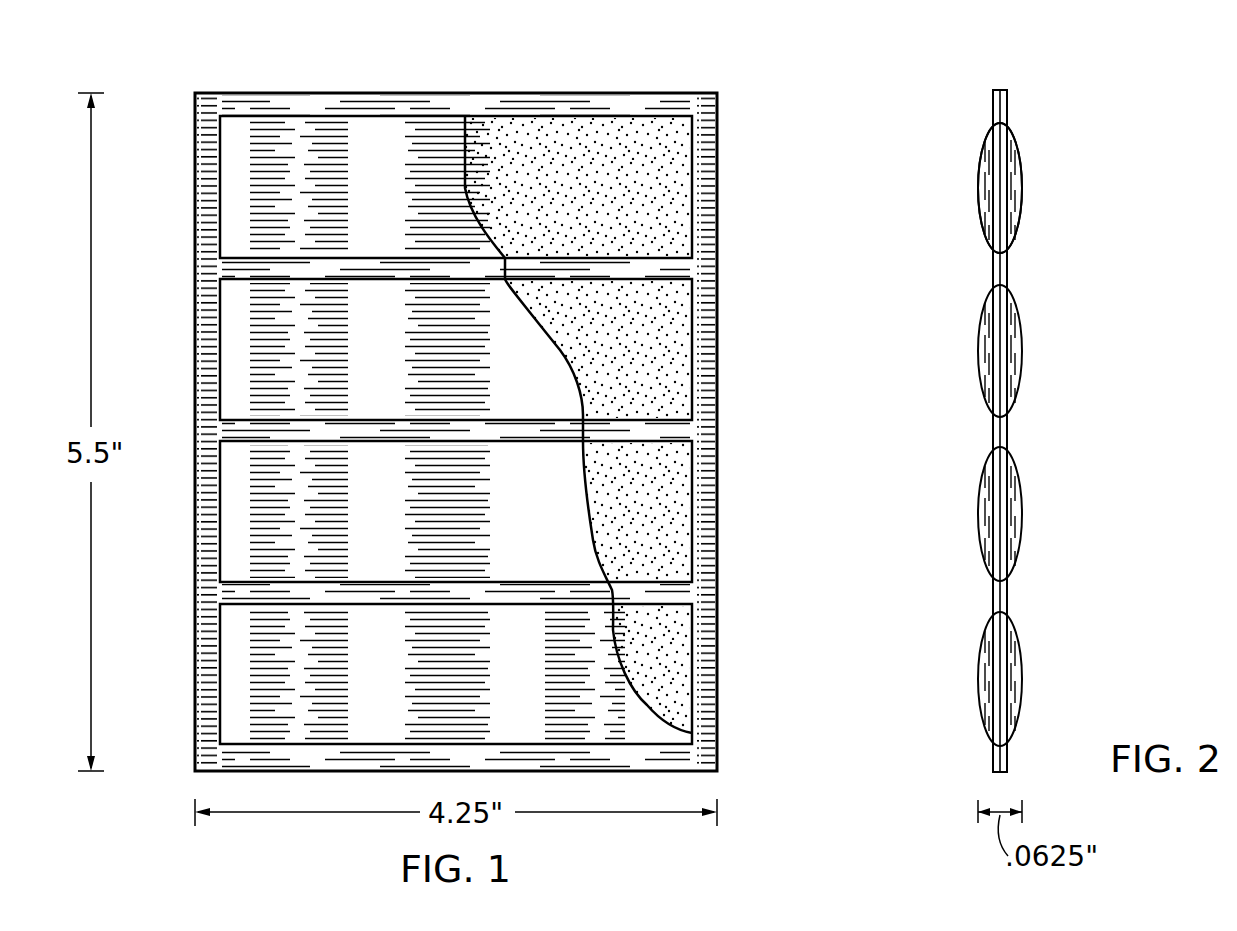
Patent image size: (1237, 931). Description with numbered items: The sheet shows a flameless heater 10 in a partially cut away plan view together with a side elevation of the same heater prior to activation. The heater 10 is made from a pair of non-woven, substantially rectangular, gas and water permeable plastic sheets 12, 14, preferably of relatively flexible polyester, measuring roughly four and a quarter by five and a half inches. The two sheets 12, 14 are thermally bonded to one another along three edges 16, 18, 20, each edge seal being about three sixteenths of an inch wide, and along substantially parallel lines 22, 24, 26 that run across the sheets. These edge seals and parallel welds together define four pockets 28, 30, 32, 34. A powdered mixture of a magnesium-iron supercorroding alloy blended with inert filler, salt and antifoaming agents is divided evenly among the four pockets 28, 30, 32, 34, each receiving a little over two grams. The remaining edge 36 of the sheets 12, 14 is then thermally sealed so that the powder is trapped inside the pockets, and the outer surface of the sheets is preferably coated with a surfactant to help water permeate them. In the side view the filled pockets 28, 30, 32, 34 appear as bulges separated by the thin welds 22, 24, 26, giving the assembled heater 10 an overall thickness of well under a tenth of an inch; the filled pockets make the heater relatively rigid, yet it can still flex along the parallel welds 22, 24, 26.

In FIG. 1, the flameless heater 10 is at (645, 78).
In FIG. 1, the plastic sheet 12 is at (365, 157).
In FIG. 2, the plastic sheet 12 is at (978, 186).
In FIG. 2, the plastic sheet 14 is at (1021, 197).
In FIG. 1, the edge 16 is at (500, 106).
In FIG. 2, the edge 16 is at (1003, 100).
In FIG. 1, the edge 18 is at (203, 302).
In FIG. 1, the edge 20 is at (345, 753).
In FIG. 2, the edge 20 is at (1005, 763).
In FIG. 1, the parallel line 22 is at (652, 268).
In FIG. 2, the parallel line 22 is at (1004, 272).
In FIG. 1, the parallel line 24 is at (690, 433).
In FIG. 2, the parallel line 24 is at (1008, 433).
In FIG. 1, the parallel line 26 is at (672, 592).
In FIG. 2, the parallel line 26 is at (1008, 597).
In FIG. 1, the pocket 28 is at (685, 200).
In FIG. 2, the pocket 28 is at (1042, 167).
In FIG. 1, the pocket 30 is at (660, 352).
In FIG. 2, the pocket 30 is at (1037, 359).
In FIG. 1, the pocket 32 is at (668, 518).
In FIG. 2, the pocket 32 is at (1037, 522).
In FIG. 1, the pocket 34 is at (665, 668).
In FIG. 2, the pocket 34 is at (1037, 687).
In FIG. 1, the remaining edge 36 is at (720, 183).
In FIG. 2, the remaining edge 36 is at (993, 250).